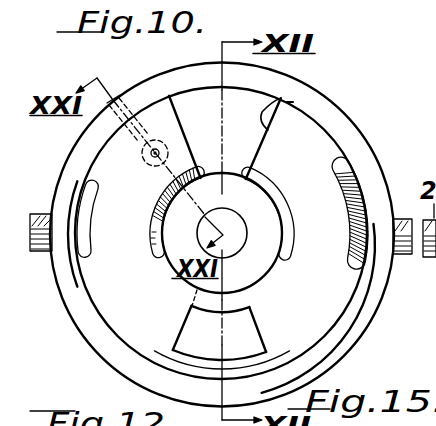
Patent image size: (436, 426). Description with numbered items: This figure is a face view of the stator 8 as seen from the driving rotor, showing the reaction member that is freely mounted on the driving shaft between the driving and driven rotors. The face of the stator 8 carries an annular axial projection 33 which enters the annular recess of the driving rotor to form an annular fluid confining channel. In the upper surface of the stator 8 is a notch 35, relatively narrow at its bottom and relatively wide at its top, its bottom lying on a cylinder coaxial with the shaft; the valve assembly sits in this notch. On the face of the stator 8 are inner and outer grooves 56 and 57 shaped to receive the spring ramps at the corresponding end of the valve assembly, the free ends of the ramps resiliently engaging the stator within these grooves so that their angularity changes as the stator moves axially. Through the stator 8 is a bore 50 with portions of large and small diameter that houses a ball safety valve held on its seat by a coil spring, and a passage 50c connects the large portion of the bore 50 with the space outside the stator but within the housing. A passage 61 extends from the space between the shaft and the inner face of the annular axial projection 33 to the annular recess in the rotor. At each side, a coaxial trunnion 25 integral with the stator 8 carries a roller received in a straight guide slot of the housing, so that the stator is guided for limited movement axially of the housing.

The stator 8 is at (346, 121).
The annular axial projection 33 is at (120, 325).
The notch 35 is at (277, 99).
The passage 61 is at (250, 330).
The inner groove 56 is at (157, 253).
The outer groove 57 is at (87, 196).
The bore 50 is at (147, 159).
The passage 50c is at (133, 72).
The trunnion 25 is at (44, 253).